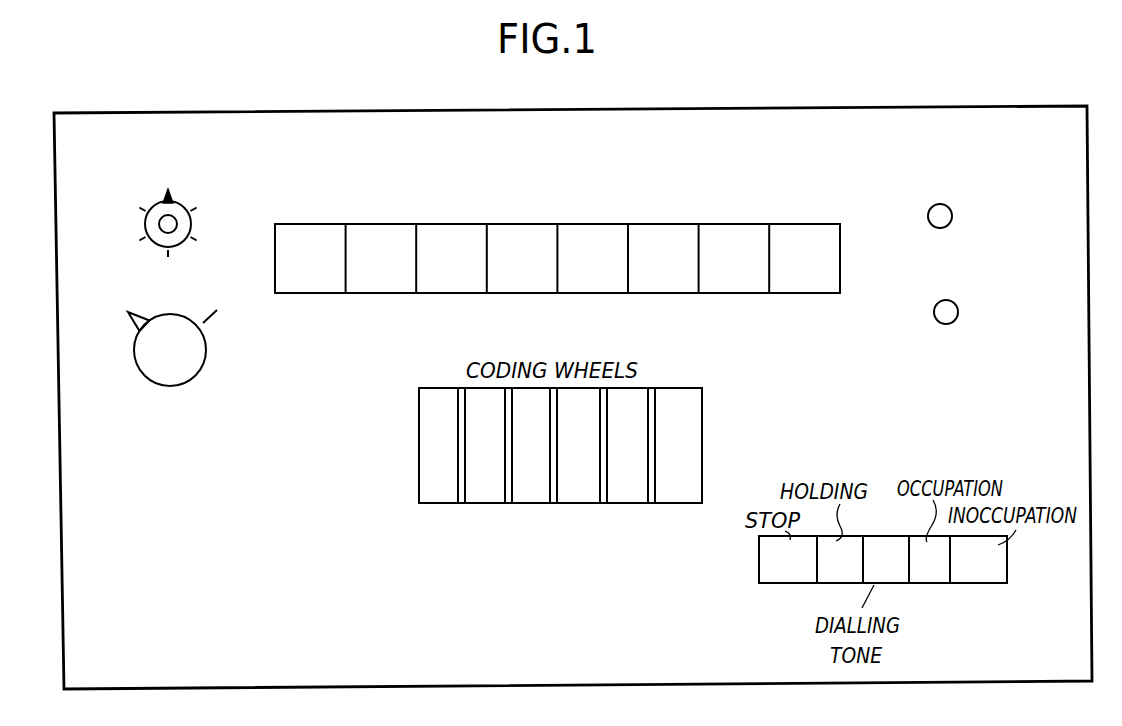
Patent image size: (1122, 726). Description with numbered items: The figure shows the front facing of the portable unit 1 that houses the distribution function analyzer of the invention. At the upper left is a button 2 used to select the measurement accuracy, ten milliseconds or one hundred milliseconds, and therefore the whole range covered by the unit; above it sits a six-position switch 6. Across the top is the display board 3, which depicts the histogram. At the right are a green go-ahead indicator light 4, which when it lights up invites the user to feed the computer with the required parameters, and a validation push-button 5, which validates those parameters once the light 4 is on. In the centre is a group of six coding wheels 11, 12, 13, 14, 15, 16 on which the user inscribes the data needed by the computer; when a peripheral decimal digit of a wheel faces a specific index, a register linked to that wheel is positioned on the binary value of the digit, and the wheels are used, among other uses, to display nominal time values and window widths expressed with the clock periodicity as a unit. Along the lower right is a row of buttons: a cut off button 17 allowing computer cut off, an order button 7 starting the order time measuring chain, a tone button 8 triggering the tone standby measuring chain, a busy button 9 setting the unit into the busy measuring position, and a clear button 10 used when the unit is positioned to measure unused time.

The portable unit 1 is at (458, 122).
The button to select measurement accuracy 2 is at (206, 352).
The display board 3 is at (524, 233).
The go-ahead indicator light 4 is at (945, 208).
The validation push-button 5 is at (953, 306).
The six-position switch 6 is at (183, 212).
The order button 7 is at (836, 578).
The tone button 8 is at (886, 578).
The busy button 9 is at (926, 578).
The clear button 10 is at (978, 578).
The coding wheel 11 is at (446, 498).
The coding wheel 12 is at (485, 498).
The coding wheel 13 is at (527, 498).
The coding wheel 14 is at (573, 498).
The coding wheel 15 is at (621, 498).
The coding wheel 16 is at (670, 498).
The cut off button 17 is at (782, 578).